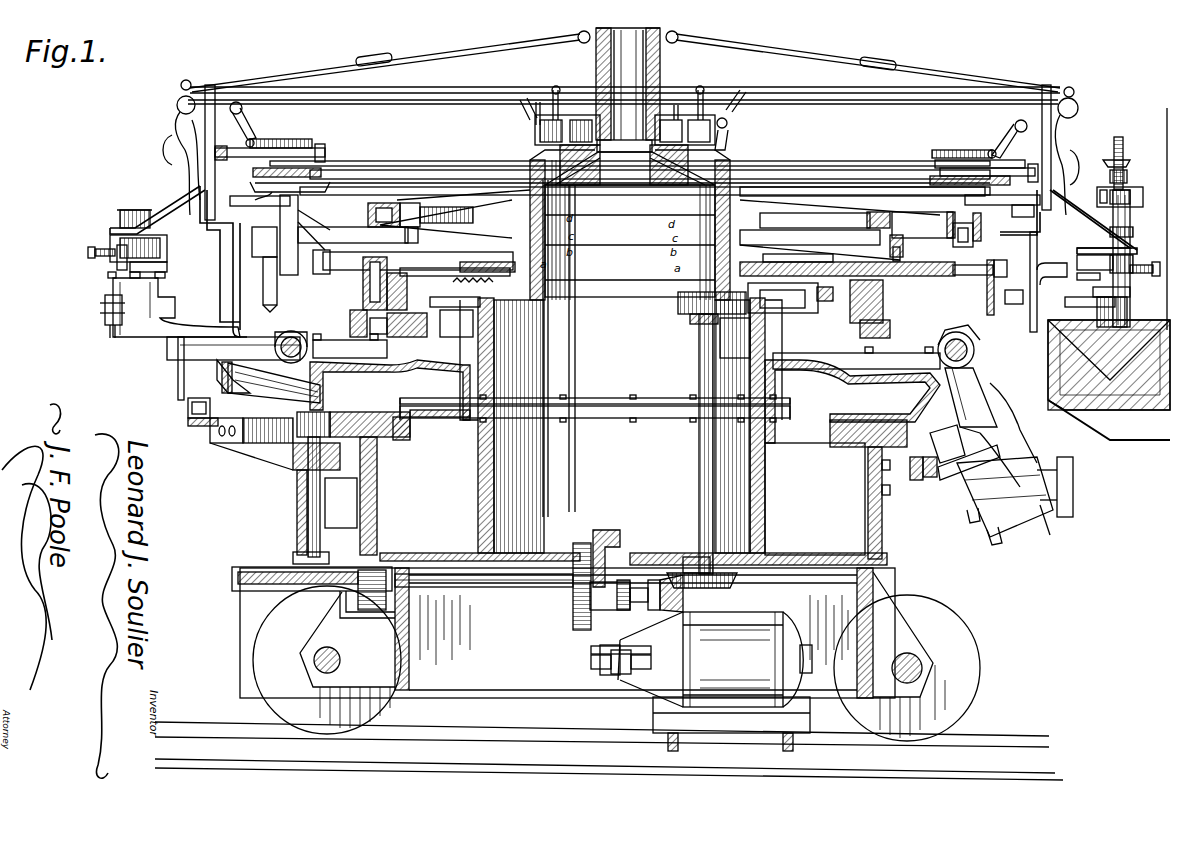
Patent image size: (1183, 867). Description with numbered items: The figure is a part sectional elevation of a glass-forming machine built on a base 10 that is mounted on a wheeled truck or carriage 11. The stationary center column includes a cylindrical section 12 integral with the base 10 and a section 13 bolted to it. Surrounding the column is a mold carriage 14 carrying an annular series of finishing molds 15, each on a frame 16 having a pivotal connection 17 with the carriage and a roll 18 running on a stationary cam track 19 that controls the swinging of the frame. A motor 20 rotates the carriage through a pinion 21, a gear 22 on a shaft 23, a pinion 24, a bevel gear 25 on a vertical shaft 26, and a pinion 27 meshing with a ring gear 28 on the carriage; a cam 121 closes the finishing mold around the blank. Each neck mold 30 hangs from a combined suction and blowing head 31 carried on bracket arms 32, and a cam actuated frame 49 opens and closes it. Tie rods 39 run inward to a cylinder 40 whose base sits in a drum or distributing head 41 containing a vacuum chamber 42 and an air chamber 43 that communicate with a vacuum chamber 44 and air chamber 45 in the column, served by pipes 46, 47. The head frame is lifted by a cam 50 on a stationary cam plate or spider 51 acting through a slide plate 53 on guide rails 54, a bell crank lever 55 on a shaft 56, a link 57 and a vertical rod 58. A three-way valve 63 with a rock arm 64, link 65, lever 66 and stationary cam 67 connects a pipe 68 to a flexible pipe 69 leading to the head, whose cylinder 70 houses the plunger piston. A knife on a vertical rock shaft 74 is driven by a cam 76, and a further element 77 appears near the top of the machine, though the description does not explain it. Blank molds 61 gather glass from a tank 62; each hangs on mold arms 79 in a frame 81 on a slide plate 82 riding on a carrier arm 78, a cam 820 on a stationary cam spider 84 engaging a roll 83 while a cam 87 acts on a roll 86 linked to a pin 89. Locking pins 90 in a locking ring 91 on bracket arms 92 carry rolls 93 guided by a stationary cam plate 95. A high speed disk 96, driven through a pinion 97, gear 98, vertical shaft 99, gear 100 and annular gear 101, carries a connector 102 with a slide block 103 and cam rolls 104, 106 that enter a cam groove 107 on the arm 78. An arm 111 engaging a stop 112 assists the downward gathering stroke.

The base 10 is at (875, 535).
The wheeled truck or carriage 11 is at (877, 594).
The cylindrical section 12 is at (768, 478).
The column section 13 is at (462, 396).
The mold carriage 14 is at (955, 418).
The finishing mold 15 is at (150, 288).
The frame 16 is at (1010, 421).
The pivotal connection 17 is at (965, 350).
The roll 18 is at (186, 414).
The stationary cam track 19 is at (200, 428).
The motor 20 is at (765, 644).
The pinion 21 is at (574, 664).
The gear 22 is at (572, 614).
The shaft 23 is at (492, 596).
The pinion 24 is at (376, 612).
The bevel gear 25 is at (262, 584).
The vertical shaft 26 is at (310, 528).
The pinion 27 is at (298, 412).
The ring gear 28 is at (381, 482).
The neck mold 30 is at (117, 262).
The combined suction and blowing head 31 is at (168, 247).
The bracket arms 32 is at (623, 261).
The tie rods 39 is at (468, 56).
The cylinder 40 is at (652, 78).
The drum or distributing head 41 is at (680, 110).
The vacuum chamber 42 is at (624, 153).
The air chamber 43 is at (719, 113).
The vacuum chamber 44 is at (660, 152).
The air chamber 45 is at (676, 170).
The pipe 46 is at (550, 455).
The pipe 47 is at (575, 482).
The cam actuated frame 49 is at (92, 252).
The cam 50 is at (936, 163).
The stationary cam plate or spider 51 is at (432, 165).
The slide plate 53 is at (260, 170).
The guide rails 54 is at (626, 157).
The bell crank lever 55 is at (254, 126).
The shaft 56 is at (243, 108).
The link 57 is at (290, 140).
The vertical rod 58 is at (979, 146).
The blank mold 61 is at (278, 305).
The tank 62 is at (1055, 326).
The three-way valve 63 is at (1088, 126).
The rock arm 64 is at (1078, 105).
The link 65 is at (385, 100).
The lever 66 is at (735, 124).
The stationary cam 67 is at (728, 142).
The pipe 68 is at (446, 87).
The flexible pipe 69 is at (190, 125).
The cylinder 70 is at (136, 210).
The vertical rock shaft 74 is at (1120, 155).
The cam 76 is at (255, 186).
The rod 77 is at (578, 112).
The arm 78 is at (654, 225).
The mold arms 79 is at (1014, 304).
The frame 81 is at (355, 214).
The slide plate 82 is at (948, 278).
The roll 83 is at (888, 242).
The stationary cam spider 84 is at (870, 208).
The roll 86 is at (958, 244).
The cam 87 is at (952, 226).
The pin 89 is at (987, 287).
The locking pins 90 is at (362, 288).
The locking ring 91 is at (360, 300).
The bracket arms 92 is at (350, 314).
The roll 93 is at (399, 335).
The stationary cam plate 95 is at (864, 332).
The driving element or high speed disk 96 is at (750, 336).
The pinion 97 is at (660, 606).
The gear 98 is at (733, 578).
The vertical shaft 99 is at (698, 490).
The gear 100 is at (680, 304).
The annular gear 101 is at (515, 272).
The connector 102 is at (456, 323).
The slide block 103 is at (455, 302).
The cam roll 104 is at (407, 325).
The cam roll 106 is at (432, 272).
The cam groove 107 is at (790, 262).
The arm 111 is at (1020, 208).
The stop 112 is at (1012, 220).
The cam 121 is at (626, 351).
The cam 820 is at (869, 222).